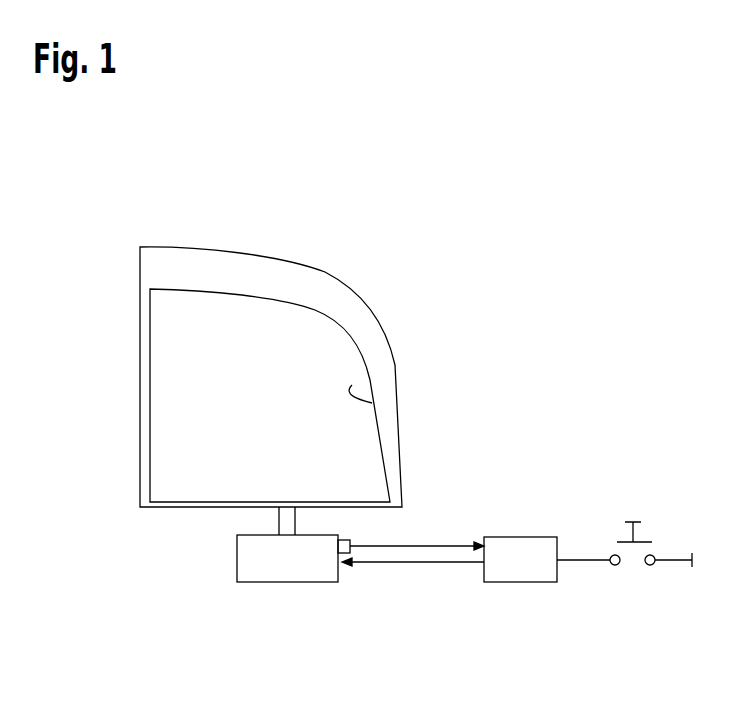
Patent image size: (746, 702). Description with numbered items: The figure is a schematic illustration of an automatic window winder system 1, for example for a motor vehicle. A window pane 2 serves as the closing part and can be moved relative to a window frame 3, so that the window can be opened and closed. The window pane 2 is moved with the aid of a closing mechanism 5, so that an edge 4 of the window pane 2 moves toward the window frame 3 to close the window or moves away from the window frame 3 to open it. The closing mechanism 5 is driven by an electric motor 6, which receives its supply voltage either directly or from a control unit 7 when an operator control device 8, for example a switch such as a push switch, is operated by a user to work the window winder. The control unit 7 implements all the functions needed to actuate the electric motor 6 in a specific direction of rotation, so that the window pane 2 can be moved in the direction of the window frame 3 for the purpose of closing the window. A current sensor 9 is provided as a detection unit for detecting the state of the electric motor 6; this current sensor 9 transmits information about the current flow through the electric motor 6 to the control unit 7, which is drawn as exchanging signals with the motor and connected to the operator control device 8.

The window winder system 1 is at (473, 285).
The window pane 2 is at (160, 390).
The window frame 3 is at (363, 302).
The edge 4 is at (352, 385).
The closing mechanism 5 is at (287, 523).
The electric motor 6 is at (290, 568).
The control unit 7 is at (521, 570).
The operator control device 8 is at (636, 530).
The current sensor 9 is at (355, 538).